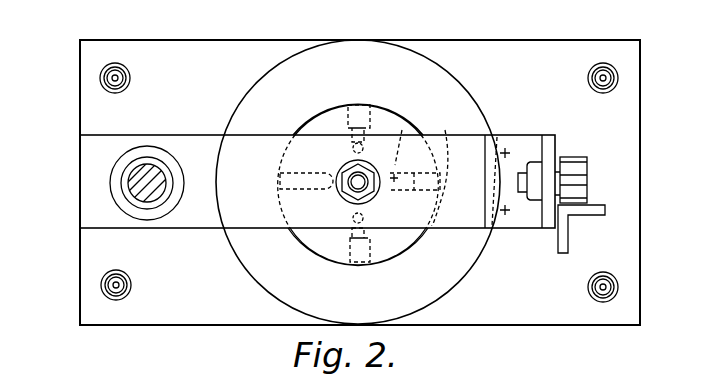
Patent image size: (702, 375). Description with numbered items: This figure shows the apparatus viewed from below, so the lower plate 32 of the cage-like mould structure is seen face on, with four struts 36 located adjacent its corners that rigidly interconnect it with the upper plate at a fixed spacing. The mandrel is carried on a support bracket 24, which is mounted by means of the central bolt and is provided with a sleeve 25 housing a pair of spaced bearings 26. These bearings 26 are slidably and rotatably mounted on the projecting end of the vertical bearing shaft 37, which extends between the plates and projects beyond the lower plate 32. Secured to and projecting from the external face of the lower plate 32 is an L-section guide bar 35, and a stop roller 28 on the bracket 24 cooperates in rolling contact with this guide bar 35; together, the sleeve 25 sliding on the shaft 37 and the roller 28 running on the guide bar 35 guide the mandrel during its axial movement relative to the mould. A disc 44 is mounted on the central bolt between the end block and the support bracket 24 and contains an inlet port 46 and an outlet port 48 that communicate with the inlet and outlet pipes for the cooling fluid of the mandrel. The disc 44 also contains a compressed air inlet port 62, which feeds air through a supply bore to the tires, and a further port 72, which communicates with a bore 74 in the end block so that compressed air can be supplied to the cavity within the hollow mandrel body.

The support bracket 24 is at (192, 210).
The sleeve 25 is at (110, 184).
The bearings 26 is at (132, 165).
The roller 28 is at (576, 157).
The lower plate 32 is at (488, 57).
The guide bar 35 is at (558, 240).
The struts 36 is at (109, 62).
The bearing shaft 37 is at (153, 165).
The disc 44 is at (322, 122).
The inlet port 46 is at (357, 104).
The outlet port 48 is at (357, 262).
The compressed air inlet port 62 is at (280, 182).
The port 72 is at (446, 140).
The bore 74 is at (402, 130).